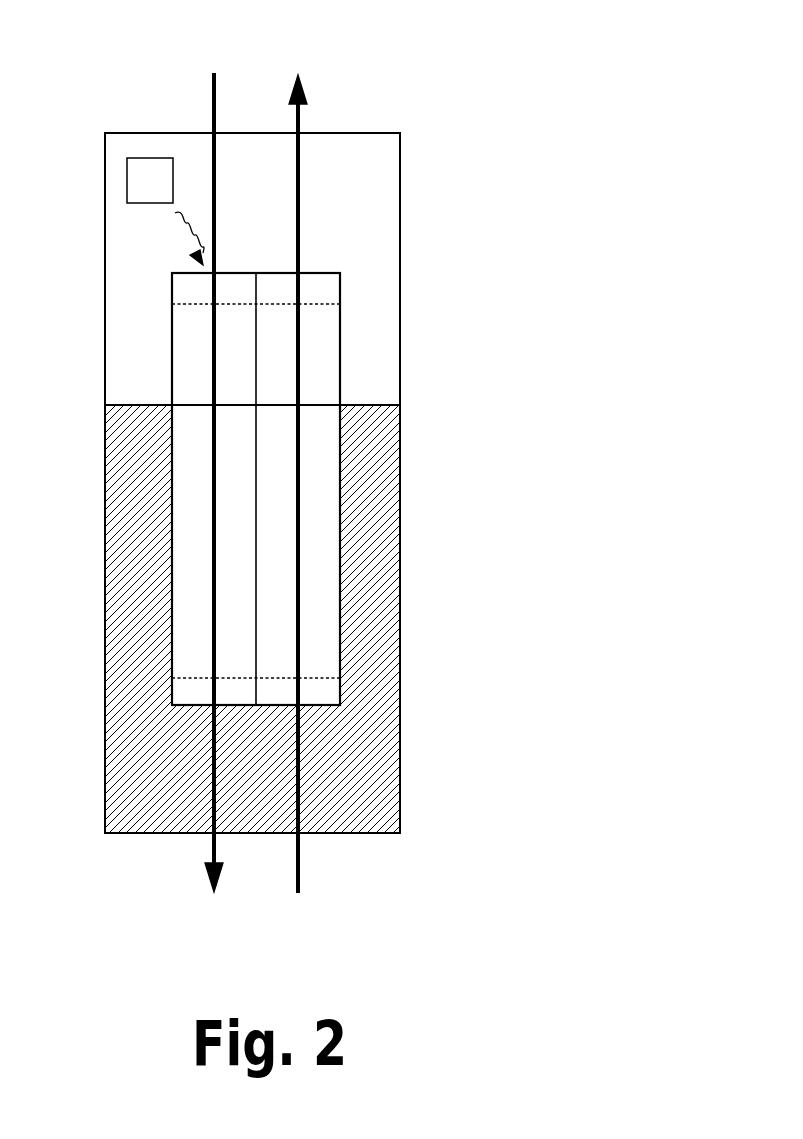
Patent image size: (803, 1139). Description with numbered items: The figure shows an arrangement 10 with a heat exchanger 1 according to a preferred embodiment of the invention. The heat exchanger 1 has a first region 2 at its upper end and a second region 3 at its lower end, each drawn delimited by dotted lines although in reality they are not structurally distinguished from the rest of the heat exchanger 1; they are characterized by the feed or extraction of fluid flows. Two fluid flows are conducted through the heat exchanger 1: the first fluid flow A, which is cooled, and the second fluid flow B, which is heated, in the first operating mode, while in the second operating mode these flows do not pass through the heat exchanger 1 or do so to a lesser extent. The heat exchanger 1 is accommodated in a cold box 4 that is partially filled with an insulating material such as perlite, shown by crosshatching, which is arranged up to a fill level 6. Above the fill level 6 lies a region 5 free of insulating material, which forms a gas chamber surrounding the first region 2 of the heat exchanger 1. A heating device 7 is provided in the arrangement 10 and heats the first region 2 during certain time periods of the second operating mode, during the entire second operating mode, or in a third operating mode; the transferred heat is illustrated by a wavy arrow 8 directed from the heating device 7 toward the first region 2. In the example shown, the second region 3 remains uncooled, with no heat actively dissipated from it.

The heat exchanger 1 is at (348, 362).
The first region 2 is at (330, 283).
The second region 3 is at (325, 692).
The cold box 4 is at (401, 133).
The region free of insulating material 5 is at (365, 194).
The fill level 6 is at (137, 405).
The heating device 7 is at (153, 170).
The wavy arrow 8 is at (175, 213).
The arrangement 10 is at (507, 150).
The first fluid flow A is at (214, 105).
The second fluid flow B is at (298, 863).